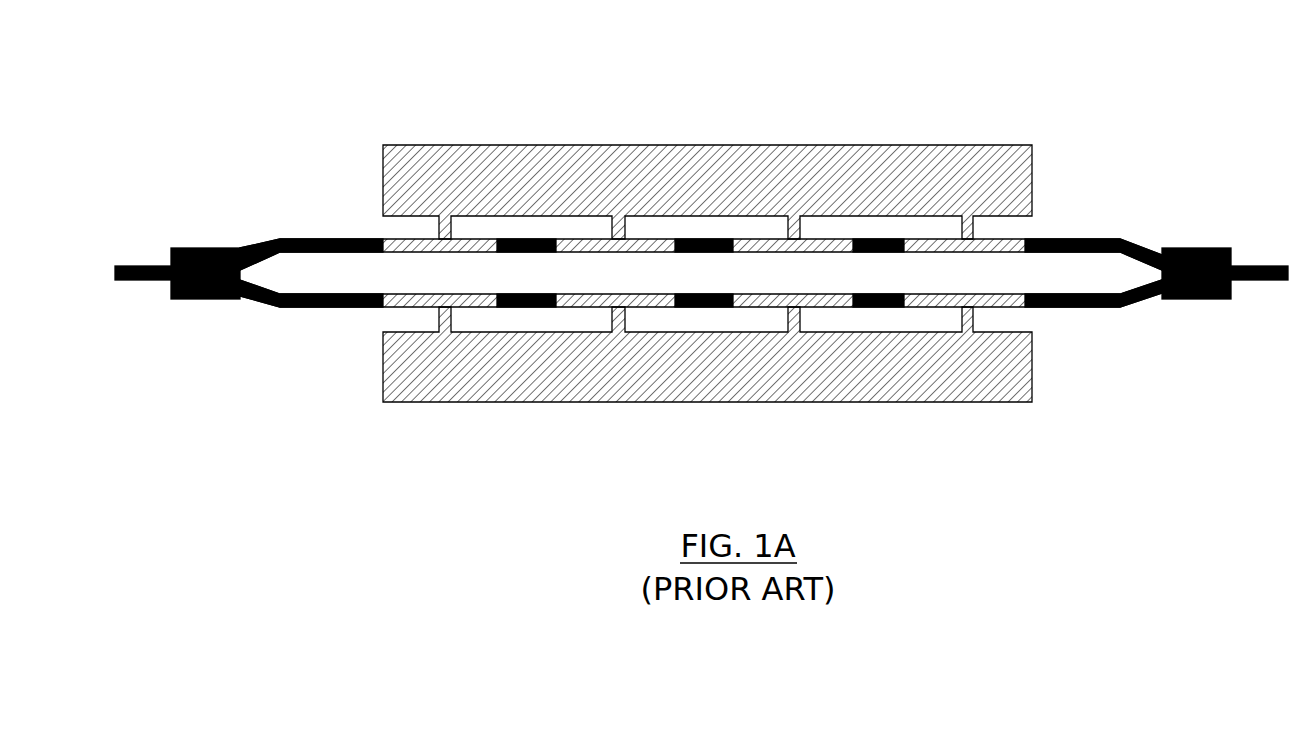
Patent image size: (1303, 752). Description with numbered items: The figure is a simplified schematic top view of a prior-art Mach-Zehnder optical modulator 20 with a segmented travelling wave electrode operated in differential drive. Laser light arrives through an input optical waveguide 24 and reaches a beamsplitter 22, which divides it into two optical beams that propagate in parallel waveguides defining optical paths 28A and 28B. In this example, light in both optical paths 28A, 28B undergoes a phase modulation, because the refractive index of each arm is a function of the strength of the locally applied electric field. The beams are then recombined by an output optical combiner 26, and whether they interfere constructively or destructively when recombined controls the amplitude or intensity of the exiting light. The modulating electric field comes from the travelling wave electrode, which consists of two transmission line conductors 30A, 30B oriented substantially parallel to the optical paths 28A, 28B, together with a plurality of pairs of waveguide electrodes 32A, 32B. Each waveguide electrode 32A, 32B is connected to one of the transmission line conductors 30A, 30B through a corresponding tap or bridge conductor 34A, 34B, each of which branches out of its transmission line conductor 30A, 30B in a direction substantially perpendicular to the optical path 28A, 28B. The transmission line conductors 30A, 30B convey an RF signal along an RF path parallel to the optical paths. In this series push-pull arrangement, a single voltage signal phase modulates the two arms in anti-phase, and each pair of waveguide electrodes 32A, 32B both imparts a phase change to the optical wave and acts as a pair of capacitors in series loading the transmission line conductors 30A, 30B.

The Mach-Zehnder optical modulator 20 is at (701, 258).
The beamsplitter 22 is at (222, 247).
The input optical waveguide 24 is at (145, 281).
The output optical combiner 26 is at (1196, 300).
The optical path 28A is at (1095, 239).
The optical path 28B is at (1083, 308).
The transmission line conductor 30A is at (500, 160).
The transmission line conductor 30B is at (527, 403).
The waveguide electrode 32A is at (843, 252).
The waveguide electrode 32B is at (913, 294).
The bridge conductor 34A is at (800, 229).
The bridge conductor 34B is at (802, 321).